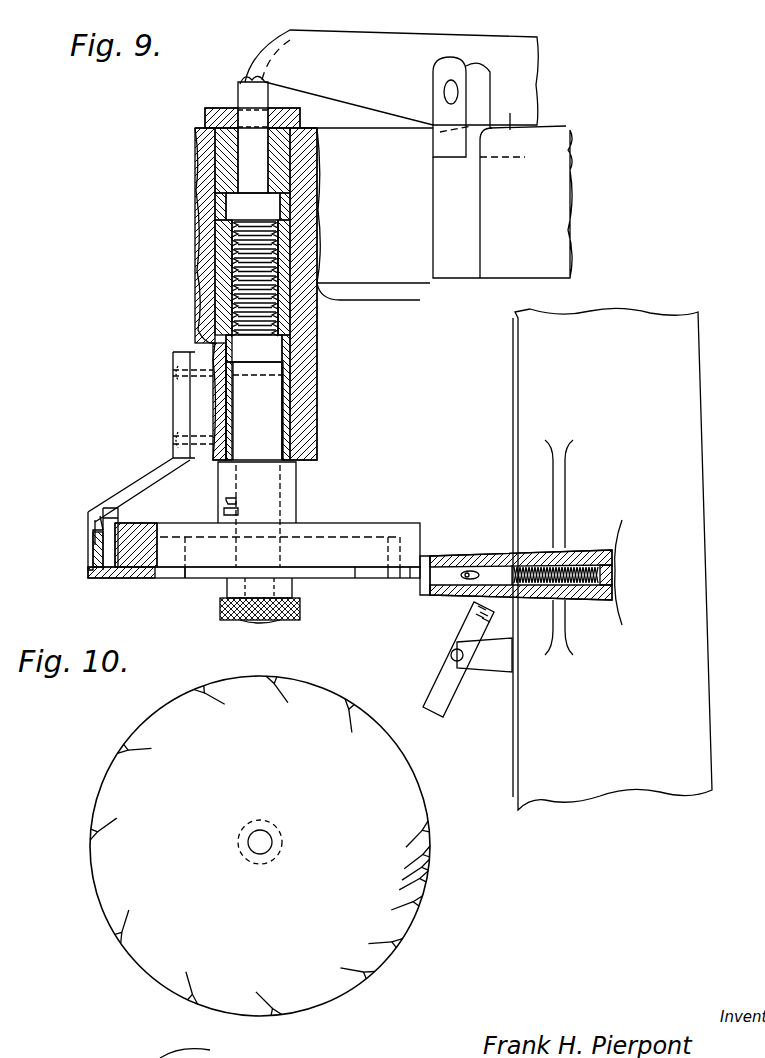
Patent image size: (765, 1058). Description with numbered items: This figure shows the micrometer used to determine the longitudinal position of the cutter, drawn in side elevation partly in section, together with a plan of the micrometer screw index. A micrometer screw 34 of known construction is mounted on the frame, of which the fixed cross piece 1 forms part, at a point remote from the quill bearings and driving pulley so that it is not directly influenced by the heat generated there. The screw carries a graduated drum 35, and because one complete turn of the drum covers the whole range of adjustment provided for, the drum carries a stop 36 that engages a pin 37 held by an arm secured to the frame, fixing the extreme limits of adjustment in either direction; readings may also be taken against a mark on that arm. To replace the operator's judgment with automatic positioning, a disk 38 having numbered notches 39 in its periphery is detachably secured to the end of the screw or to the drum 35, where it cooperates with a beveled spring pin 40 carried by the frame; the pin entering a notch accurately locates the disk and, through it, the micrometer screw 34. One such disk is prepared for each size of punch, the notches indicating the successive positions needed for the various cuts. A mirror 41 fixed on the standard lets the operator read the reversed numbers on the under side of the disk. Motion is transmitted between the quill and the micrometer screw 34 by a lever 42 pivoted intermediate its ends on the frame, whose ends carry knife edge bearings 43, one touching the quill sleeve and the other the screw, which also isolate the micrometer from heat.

In FIG. 9, the fixed cross piece 1 is at (568, 228).
In FIG. 9, the micrometer screw 34 is at (238, 98).
In FIG. 9, the graduated drum 35 is at (328, 535).
In FIG. 9, the stop 36 is at (103, 528).
In FIG. 9, the pin 37 is at (120, 518).
In FIG. 9, the disk 38 is at (340, 578).
In FIG. 10, the disk 38 is at (260, 846).
In FIG. 9, the notches 39 is at (192, 578).
In FIG. 10, the notches 39 is at (277, 676).
In FIG. 9, the spring pin 40 is at (428, 586).
In FIG. 9, the mirror 41 is at (436, 686).
In FIG. 9, the lever 42 is at (408, 154).
In FIG. 9, the knife edge bearings 43 is at (246, 82).